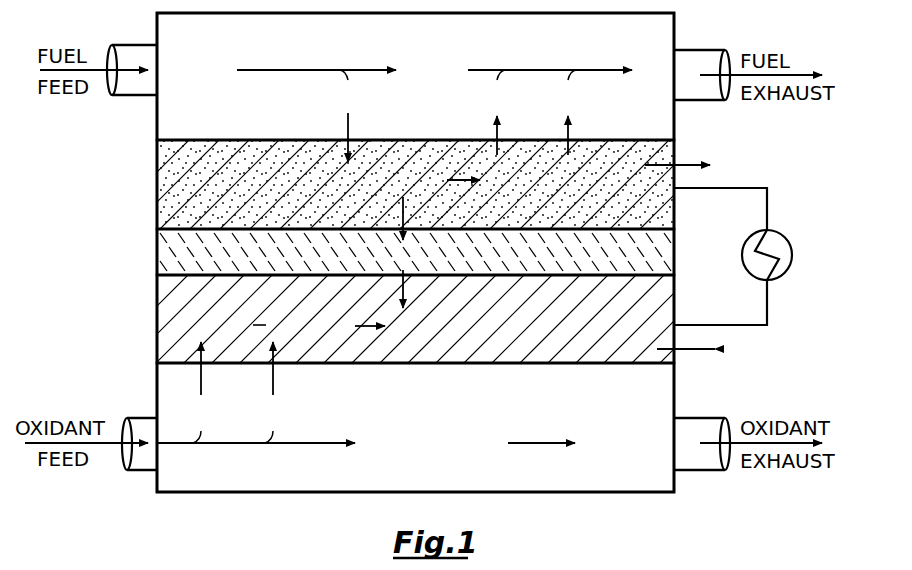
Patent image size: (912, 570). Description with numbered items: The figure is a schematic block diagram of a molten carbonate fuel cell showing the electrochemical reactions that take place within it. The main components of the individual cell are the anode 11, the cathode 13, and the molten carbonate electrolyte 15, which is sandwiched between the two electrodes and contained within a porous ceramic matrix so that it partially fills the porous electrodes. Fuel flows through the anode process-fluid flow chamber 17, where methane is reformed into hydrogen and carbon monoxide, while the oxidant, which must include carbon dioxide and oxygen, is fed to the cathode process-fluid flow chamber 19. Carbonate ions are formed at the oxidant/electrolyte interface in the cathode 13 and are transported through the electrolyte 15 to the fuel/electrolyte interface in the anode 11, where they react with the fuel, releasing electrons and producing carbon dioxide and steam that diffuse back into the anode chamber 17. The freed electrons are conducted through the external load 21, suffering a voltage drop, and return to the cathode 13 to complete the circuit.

The anode 11 is at (266, 195).
The cathode 13 is at (534, 332).
The molten carbonate electrolyte 15 is at (537, 257).
The anode process-fluid flow chamber 17 is at (235, 53).
The cathode process-fluid flow chamber 19 is at (448, 431).
The external load 21 is at (786, 238).